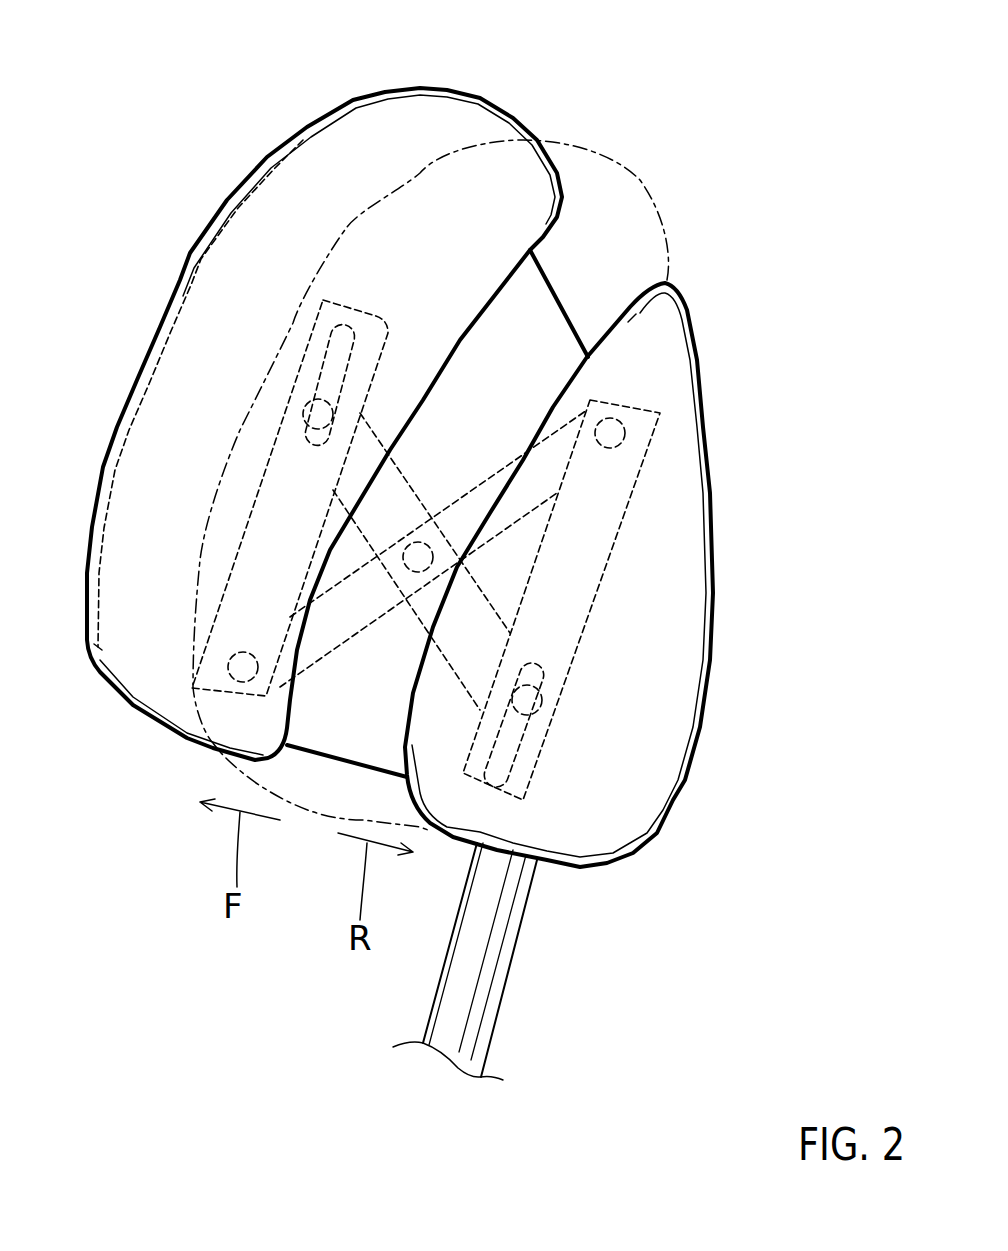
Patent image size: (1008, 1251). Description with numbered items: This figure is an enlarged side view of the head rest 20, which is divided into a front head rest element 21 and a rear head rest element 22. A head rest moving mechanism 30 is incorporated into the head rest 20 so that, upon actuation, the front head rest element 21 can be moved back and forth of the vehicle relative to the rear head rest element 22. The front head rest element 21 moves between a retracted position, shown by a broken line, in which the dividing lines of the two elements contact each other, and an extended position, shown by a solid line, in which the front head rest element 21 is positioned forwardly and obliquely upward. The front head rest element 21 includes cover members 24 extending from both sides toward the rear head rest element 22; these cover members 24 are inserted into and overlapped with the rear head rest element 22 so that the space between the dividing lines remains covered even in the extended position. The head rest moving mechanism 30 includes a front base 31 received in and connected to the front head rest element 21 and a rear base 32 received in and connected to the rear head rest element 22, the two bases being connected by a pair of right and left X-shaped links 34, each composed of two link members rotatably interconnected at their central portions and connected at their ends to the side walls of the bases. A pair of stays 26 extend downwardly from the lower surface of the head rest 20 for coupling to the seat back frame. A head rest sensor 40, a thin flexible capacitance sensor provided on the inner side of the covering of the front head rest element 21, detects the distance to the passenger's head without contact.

The head rest 20 is at (442, 435).
The front head rest element 21 is at (386, 130).
The rear head rest element 22 is at (677, 478).
The cover member 24 is at (532, 322).
The stay 26 is at (493, 930).
The head rest moving mechanism 30 is at (398, 550).
The front base 31 is at (230, 563).
The rear base 32 is at (560, 703).
The X-shaped link 34 is at (422, 477).
The head rest sensor 40 is at (170, 302).